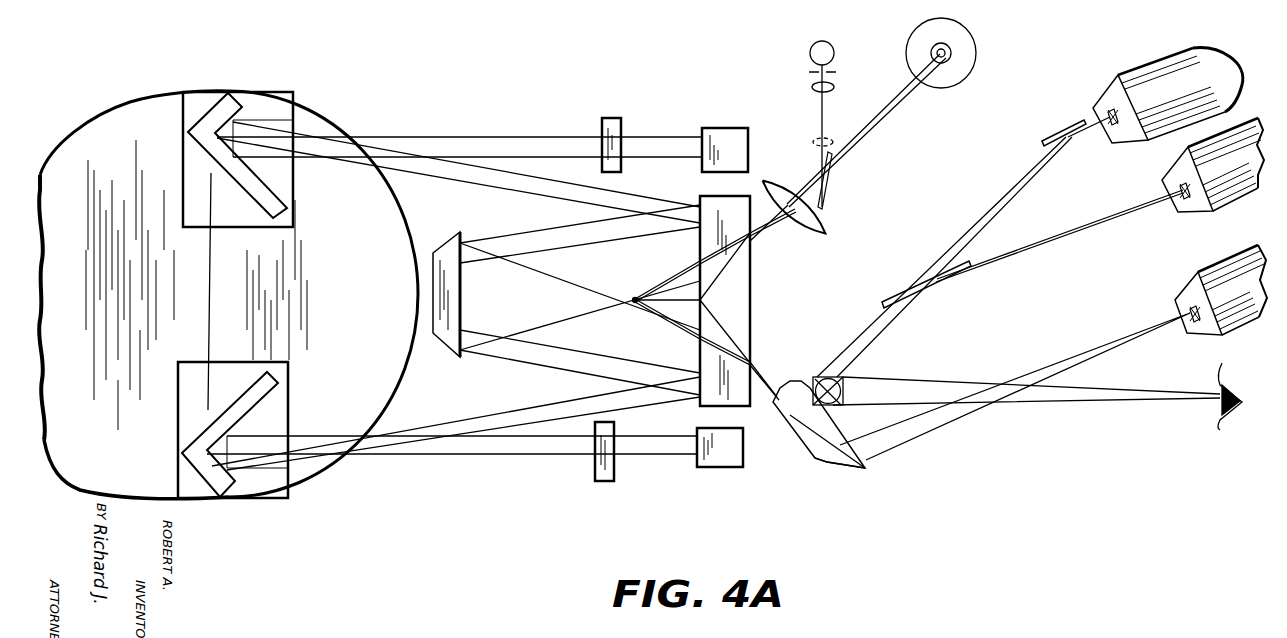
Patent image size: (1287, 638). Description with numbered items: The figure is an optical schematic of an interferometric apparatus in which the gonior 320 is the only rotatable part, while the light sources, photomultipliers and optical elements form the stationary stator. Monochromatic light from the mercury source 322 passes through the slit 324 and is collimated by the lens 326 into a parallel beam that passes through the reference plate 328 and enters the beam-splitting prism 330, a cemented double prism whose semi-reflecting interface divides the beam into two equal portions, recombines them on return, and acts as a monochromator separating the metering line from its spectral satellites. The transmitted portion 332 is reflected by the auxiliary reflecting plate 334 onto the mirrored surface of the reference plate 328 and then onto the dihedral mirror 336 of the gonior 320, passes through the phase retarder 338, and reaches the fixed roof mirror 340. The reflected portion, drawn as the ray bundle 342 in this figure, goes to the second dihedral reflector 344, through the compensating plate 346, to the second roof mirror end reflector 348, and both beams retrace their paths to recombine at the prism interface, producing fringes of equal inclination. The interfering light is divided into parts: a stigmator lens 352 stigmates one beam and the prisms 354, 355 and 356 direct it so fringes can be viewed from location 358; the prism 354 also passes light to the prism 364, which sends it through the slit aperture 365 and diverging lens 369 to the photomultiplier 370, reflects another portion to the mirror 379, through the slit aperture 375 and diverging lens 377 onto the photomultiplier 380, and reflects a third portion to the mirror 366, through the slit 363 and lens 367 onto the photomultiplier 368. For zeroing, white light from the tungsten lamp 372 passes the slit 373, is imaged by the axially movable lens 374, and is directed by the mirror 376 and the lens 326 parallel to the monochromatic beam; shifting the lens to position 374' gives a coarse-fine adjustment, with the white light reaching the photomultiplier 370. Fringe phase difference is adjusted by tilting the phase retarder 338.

The gonior 320 is at (150, 431).
The mercury 198 source 322 is at (977, 62).
The slit 324 is at (889, 85).
The collimating lens 326 is at (823, 224).
The reference plate 328 is at (752, 292).
The beam-splitting prism 330 is at (668, 318).
The transmitted beam portion 332 is at (612, 326).
The auxiliary reflecting plate 334 is at (457, 357).
The dihedral mirror 336 is at (256, 387).
The phase retarder 338 is at (602, 480).
The fixed roof mirror 340 is at (716, 467).
The light rays 342 is at (612, 240).
The second dihedral reflector 344 is at (260, 219).
The compensating plate 346 is at (608, 118).
The second roof mirror end reflector 348 is at (738, 127).
The stigmator lens 352 is at (778, 404).
The prism 354 is at (840, 405).
The prism 355 is at (848, 388).
The prism 356 is at (816, 378).
The observation location 358 is at (1224, 428).
The slit 363 is at (1181, 198).
The prism 364 is at (845, 463).
The slit aperture 365 is at (1191, 322).
The mirror 366 is at (966, 268).
The lens 367 is at (1187, 200).
The photomultiplier 368 is at (1242, 175).
The diverging lens 369 is at (1197, 323).
The photomultiplier 370 is at (1248, 299).
The tungsten lamp 372 is at (832, 42).
The slit 373 is at (838, 72).
The axially movable lens 374 is at (843, 78).
The shifted lens position 374' is at (804, 127).
The slit aperture 375 is at (1108, 122).
The mirror 376 is at (827, 200).
The diverging lens 377 is at (1116, 126).
The mirror 379 is at (1050, 128).
The photomultiplier 380 is at (1185, 83).